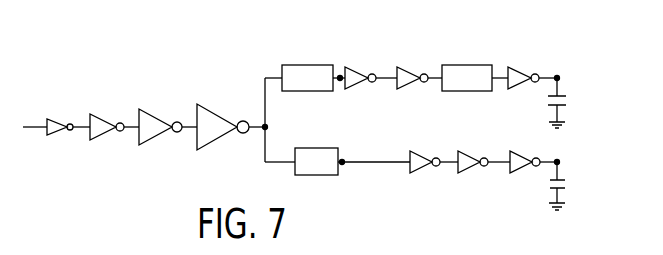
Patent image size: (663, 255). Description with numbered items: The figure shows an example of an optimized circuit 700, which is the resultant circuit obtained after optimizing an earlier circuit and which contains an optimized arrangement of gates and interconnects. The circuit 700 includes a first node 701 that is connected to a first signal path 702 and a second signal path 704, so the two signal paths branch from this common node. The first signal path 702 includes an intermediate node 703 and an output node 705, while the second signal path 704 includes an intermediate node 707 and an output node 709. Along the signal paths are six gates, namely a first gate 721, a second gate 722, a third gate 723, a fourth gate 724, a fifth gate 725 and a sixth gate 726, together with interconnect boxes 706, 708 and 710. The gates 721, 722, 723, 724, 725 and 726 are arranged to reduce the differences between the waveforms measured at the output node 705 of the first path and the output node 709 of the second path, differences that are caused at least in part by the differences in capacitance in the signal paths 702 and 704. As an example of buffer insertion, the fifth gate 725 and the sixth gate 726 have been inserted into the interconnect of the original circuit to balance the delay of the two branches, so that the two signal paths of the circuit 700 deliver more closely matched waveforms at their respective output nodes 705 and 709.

The optimized circuit 700 is at (106, 63).
The node n1 701 is at (263, 132).
The signal path A' 702 is at (385, 75).
The node n2 703 is at (340, 77).
The signal path B' 704 is at (375, 165).
The node n3 705 is at (558, 78).
The interconnect box 706 is at (295, 63).
The node m2 707 is at (343, 167).
The interconnect box 708 is at (305, 147).
The node m3 709 is at (558, 162).
The interconnect box 710 is at (462, 63).
The gate G1 721 is at (520, 87).
The gate G2 722 is at (418, 175).
The gate G3 723 is at (463, 175).
The gate G4 724 is at (515, 175).
The gate G5 725 is at (360, 88).
The gate G6 726 is at (412, 88).